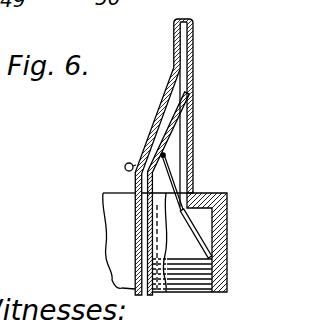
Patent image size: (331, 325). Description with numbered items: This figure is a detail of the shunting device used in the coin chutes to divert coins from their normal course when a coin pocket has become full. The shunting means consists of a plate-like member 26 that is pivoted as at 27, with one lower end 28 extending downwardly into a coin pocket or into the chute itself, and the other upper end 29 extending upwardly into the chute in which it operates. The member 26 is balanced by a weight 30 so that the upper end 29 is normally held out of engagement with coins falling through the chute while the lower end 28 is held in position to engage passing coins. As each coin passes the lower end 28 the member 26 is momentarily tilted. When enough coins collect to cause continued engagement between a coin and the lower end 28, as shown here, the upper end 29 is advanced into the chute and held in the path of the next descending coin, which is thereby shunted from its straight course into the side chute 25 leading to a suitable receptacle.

The side chute 25 is at (147, 238).
The plate-like member 26 is at (165, 132).
The pivot 27 is at (166, 155).
The lower end 28 is at (142, 201).
The upper end 29 is at (182, 122).
The weight 30 is at (125, 166).